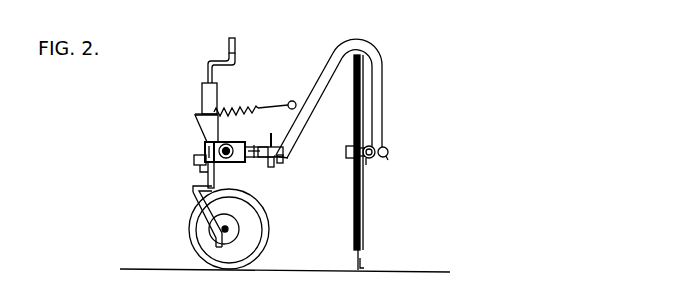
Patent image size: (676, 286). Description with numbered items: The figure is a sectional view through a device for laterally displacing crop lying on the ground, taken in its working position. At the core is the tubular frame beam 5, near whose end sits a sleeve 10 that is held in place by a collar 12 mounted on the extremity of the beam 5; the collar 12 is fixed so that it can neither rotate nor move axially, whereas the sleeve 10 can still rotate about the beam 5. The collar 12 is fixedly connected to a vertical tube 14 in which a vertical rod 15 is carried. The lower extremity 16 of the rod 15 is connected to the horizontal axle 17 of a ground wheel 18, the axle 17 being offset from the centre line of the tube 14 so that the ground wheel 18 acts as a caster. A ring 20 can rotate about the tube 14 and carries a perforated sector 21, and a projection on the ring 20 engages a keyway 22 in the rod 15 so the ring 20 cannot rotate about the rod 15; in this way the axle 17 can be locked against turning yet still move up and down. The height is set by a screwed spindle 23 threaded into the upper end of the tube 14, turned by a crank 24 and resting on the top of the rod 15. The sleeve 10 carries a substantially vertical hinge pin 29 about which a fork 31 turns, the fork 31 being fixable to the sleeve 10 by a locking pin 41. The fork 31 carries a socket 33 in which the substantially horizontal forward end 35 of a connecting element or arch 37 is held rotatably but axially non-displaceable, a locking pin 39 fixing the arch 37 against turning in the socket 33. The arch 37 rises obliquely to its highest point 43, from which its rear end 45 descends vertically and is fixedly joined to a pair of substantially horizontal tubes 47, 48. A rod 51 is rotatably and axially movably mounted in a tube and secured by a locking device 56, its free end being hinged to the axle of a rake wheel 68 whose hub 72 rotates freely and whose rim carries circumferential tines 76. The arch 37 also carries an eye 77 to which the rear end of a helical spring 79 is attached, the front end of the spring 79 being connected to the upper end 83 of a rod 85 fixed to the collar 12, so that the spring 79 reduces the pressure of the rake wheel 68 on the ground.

The frame member or beam 5 is at (230, 146).
The sleeve 10 is at (235, 163).
The collar 12 is at (205, 150).
The vertical tube 14 is at (202, 97).
The vertical rod 15 is at (214, 182).
The lower extremity of the rod 16 is at (199, 214).
The horizontal axle 17 is at (220, 246).
The ground wheel 18 is at (257, 240).
The ring 20 is at (201, 168).
The perforated sector 21 is at (195, 160).
The keyway 22 is at (196, 190).
The screwed spindle 23 is at (213, 73).
The crank 24 is at (236, 47).
The hinge pin 29 is at (215, 146).
The fork 31 is at (264, 137).
The socket 33 is at (276, 160).
The forward end of connecting element 35 is at (283, 150).
The connecting element or arch 37 is at (313, 90).
The locking pin 39 is at (281, 164).
The locking pin 41 is at (266, 162).
The highest point of connecting element 43 is at (343, 39).
The rear end of connecting element 45 is at (382, 111).
The horizontal tube 47 is at (386, 158).
The horizontal tube 48 is at (366, 160).
The rod 51 is at (373, 148).
The locking device 56 is at (388, 152).
The rake wheel 68 is at (353, 219).
The hub 72 is at (350, 158).
The tines or teeth 76 is at (372, 262).
The eye 77 is at (291, 101).
The helical spring 79 is at (246, 108).
The upper end of rod 83 is at (196, 118).
The rod 85 is at (200, 128).